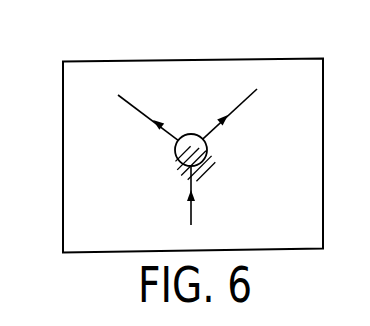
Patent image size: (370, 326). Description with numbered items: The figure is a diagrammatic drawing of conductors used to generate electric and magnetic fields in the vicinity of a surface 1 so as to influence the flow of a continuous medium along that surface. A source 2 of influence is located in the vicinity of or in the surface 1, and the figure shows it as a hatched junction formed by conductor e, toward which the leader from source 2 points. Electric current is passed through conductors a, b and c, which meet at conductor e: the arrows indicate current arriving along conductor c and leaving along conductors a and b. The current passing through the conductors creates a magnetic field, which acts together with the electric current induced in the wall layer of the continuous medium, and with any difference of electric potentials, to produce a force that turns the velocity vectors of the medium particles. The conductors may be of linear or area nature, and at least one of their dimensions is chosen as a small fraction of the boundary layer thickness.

The surface 1 is at (104, 190).
The source of influence 2 is at (192, 109).
The conductor a is at (148, 114).
The conductor b is at (230, 114).
The conductor c is at (200, 195).
The conductor e is at (201, 157).